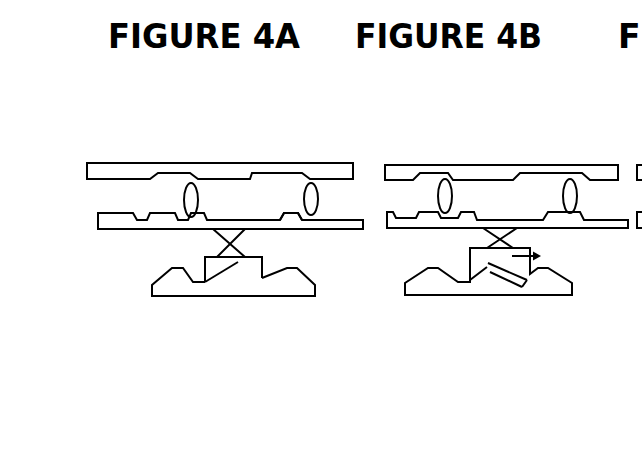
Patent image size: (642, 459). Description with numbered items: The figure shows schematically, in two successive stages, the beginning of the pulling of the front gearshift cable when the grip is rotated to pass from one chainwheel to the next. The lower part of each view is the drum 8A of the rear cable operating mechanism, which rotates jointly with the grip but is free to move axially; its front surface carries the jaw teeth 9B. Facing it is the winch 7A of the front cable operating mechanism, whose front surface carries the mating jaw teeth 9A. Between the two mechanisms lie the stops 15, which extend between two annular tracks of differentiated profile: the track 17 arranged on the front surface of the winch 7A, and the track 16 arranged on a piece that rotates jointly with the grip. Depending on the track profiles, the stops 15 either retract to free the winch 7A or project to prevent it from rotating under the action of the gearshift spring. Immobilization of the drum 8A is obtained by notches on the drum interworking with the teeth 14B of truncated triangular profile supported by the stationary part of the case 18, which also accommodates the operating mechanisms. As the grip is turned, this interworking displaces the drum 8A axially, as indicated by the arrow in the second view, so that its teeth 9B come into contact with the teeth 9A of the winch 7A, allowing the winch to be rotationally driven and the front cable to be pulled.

In FIG. 4A, the stops 15 is at (186, 192).
In FIG. 4A, the teeth of the jaw 9A is at (245, 232).
In FIG. 4A, the track 16 is at (292, 163).
In FIG. 4A, the track 17 is at (137, 228).
In FIG. 4A, the winch 7A is at (303, 229).
In FIG. 4A, the drum 8A is at (182, 284).
In FIG. 4A, the teeth 14B is at (208, 288).
In FIG. 4A, the teeth of the jaw 9B is at (230, 257).
In FIG. 4B, the case 18 is at (542, 280).